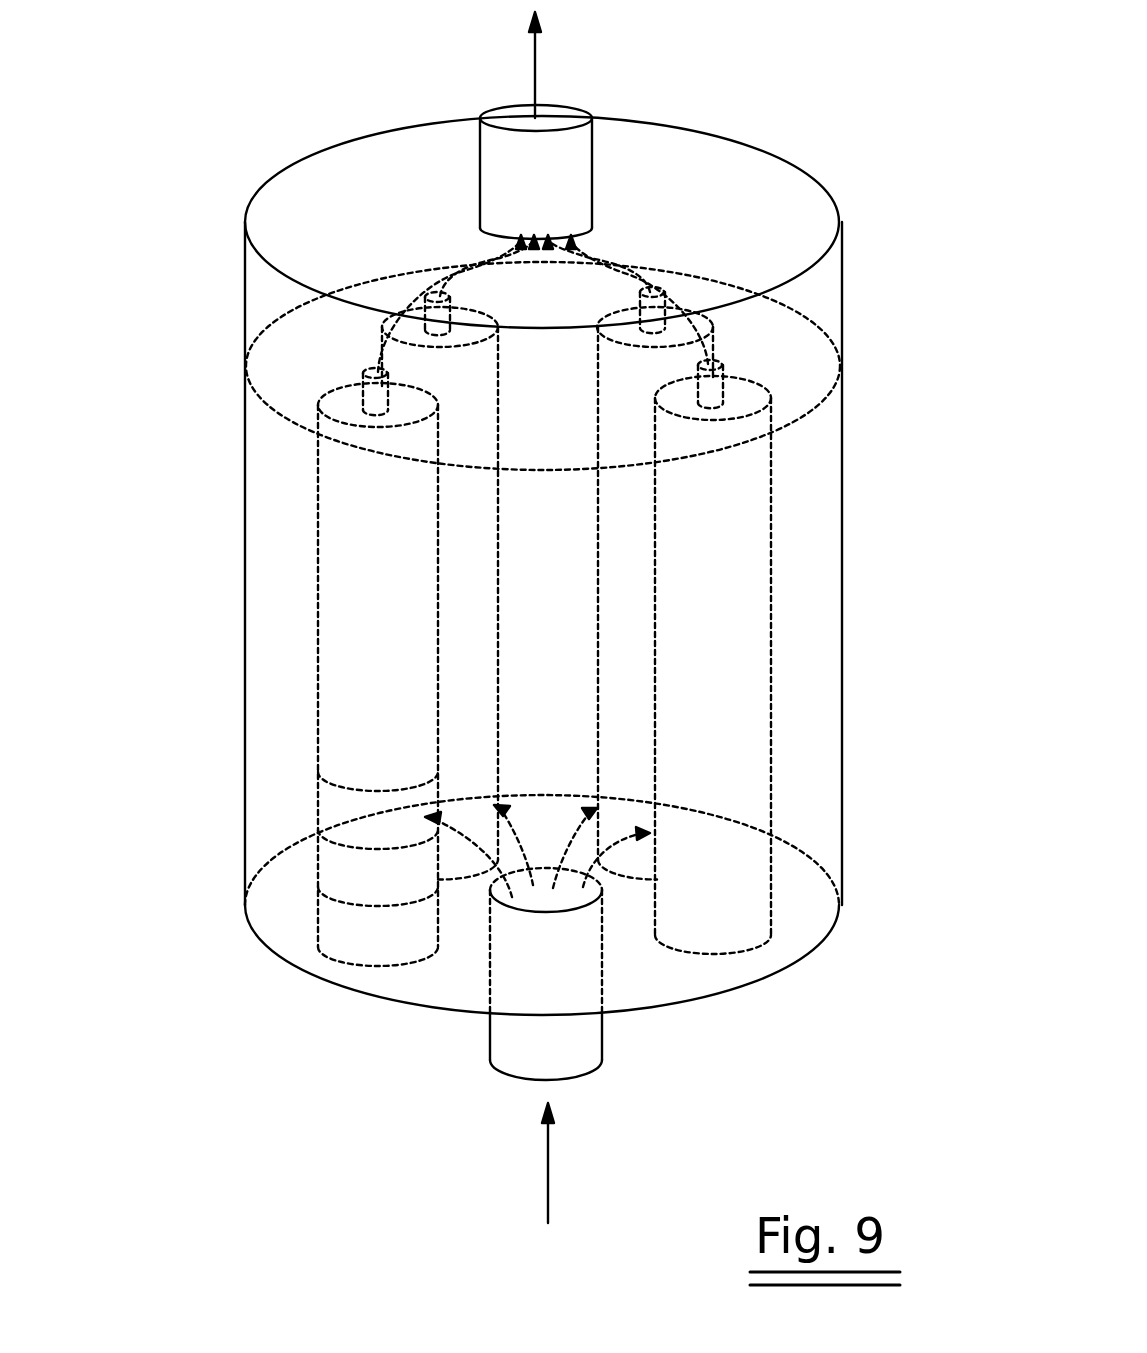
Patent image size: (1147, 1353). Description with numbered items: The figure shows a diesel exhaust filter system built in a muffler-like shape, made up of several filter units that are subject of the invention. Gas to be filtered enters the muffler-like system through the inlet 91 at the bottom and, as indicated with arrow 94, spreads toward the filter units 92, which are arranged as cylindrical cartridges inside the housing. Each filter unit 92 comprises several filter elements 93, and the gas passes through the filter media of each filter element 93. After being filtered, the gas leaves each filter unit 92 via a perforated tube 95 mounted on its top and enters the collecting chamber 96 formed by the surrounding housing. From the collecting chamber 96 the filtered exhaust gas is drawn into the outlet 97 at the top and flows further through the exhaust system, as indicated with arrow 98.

The inlet 91 is at (563, 1040).
The filter unit 92 is at (367, 643).
The filter element 93 is at (380, 882).
The arrow 94 is at (512, 822).
The perforated tube 95 is at (437, 312).
The collecting chamber 96 is at (270, 290).
The outlet 97 is at (575, 157).
The arrow 98 is at (537, 65).